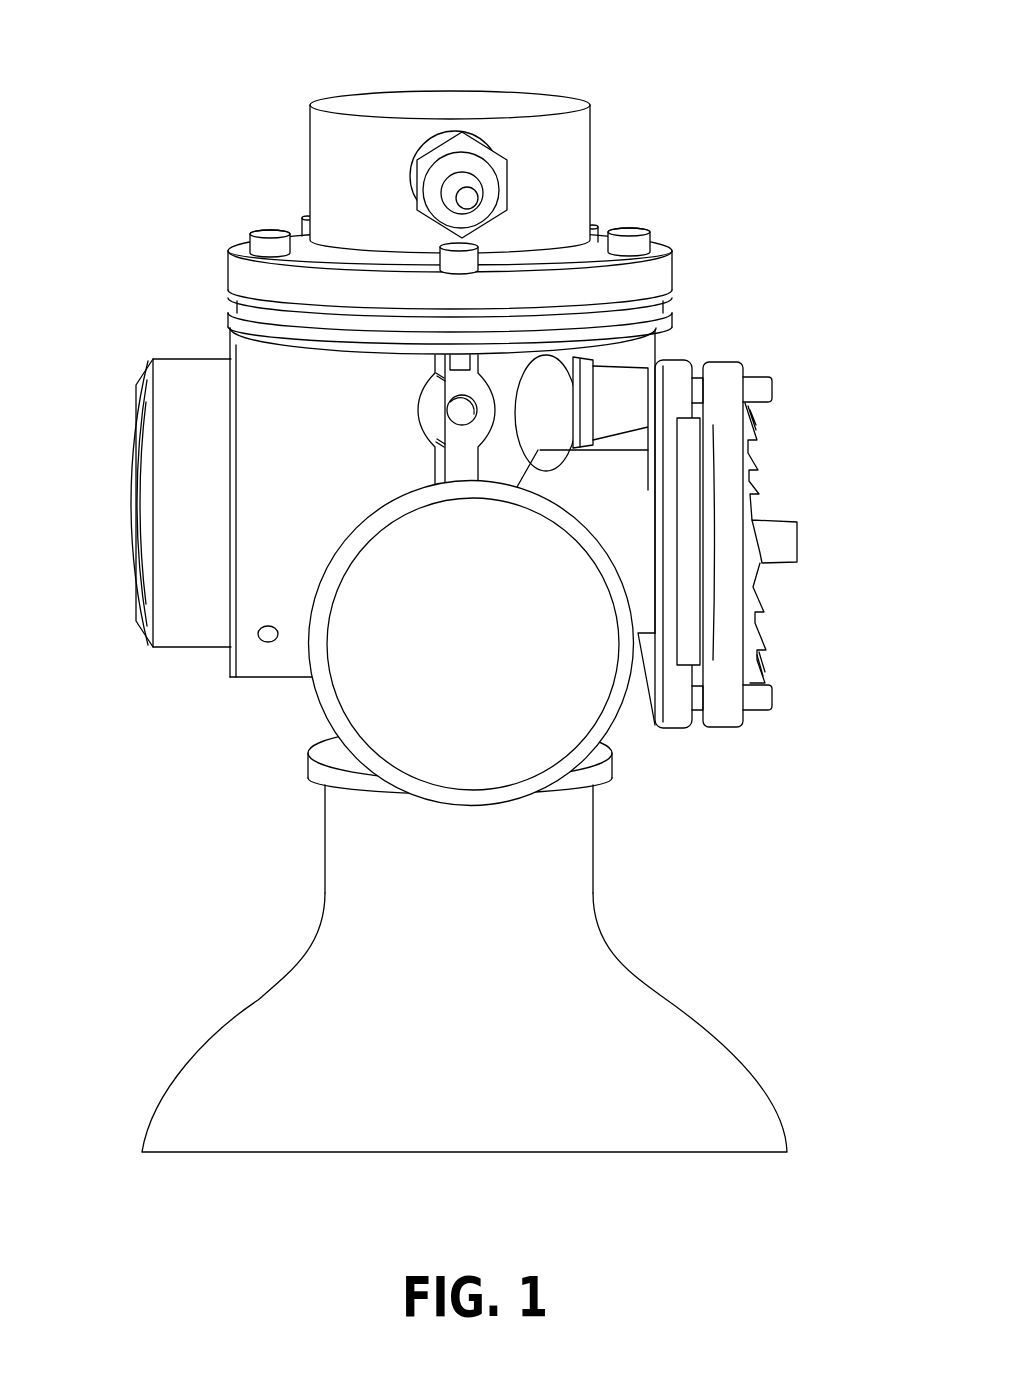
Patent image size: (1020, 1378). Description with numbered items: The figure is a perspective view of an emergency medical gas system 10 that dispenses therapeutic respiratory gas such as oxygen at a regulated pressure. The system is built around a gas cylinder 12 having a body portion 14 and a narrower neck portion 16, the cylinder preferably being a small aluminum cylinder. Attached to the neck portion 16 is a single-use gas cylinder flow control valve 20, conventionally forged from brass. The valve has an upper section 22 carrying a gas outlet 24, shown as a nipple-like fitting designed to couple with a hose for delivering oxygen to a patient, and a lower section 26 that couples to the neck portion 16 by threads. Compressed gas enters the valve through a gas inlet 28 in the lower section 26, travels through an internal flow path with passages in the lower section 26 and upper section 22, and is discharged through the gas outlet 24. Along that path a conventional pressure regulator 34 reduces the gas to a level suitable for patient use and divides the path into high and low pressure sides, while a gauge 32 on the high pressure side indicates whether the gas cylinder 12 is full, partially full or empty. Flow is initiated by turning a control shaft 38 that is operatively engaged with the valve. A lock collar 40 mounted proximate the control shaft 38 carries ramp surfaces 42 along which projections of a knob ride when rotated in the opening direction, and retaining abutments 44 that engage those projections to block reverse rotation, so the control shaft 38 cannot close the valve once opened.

The emergency medical gas system 10 is at (222, 74).
The gas cylinder 12 is at (140, 1107).
The body portion 14 is at (773, 1116).
The neck portion 16 is at (583, 862).
The gas cylinder flow control valve 20 is at (183, 332).
The upper section 22 is at (672, 268).
The gas outlet 24 is at (468, 199).
The lower section 26 is at (267, 677).
The gas inlet 28 is at (312, 765).
The gauge 32 is at (595, 710).
The pressure regulator 34 is at (408, 478).
The control shaft 38 is at (793, 540).
The lock collar 40 is at (725, 727).
The ramp surfaces 42 is at (755, 475).
The retaining abutments 44 is at (757, 593).